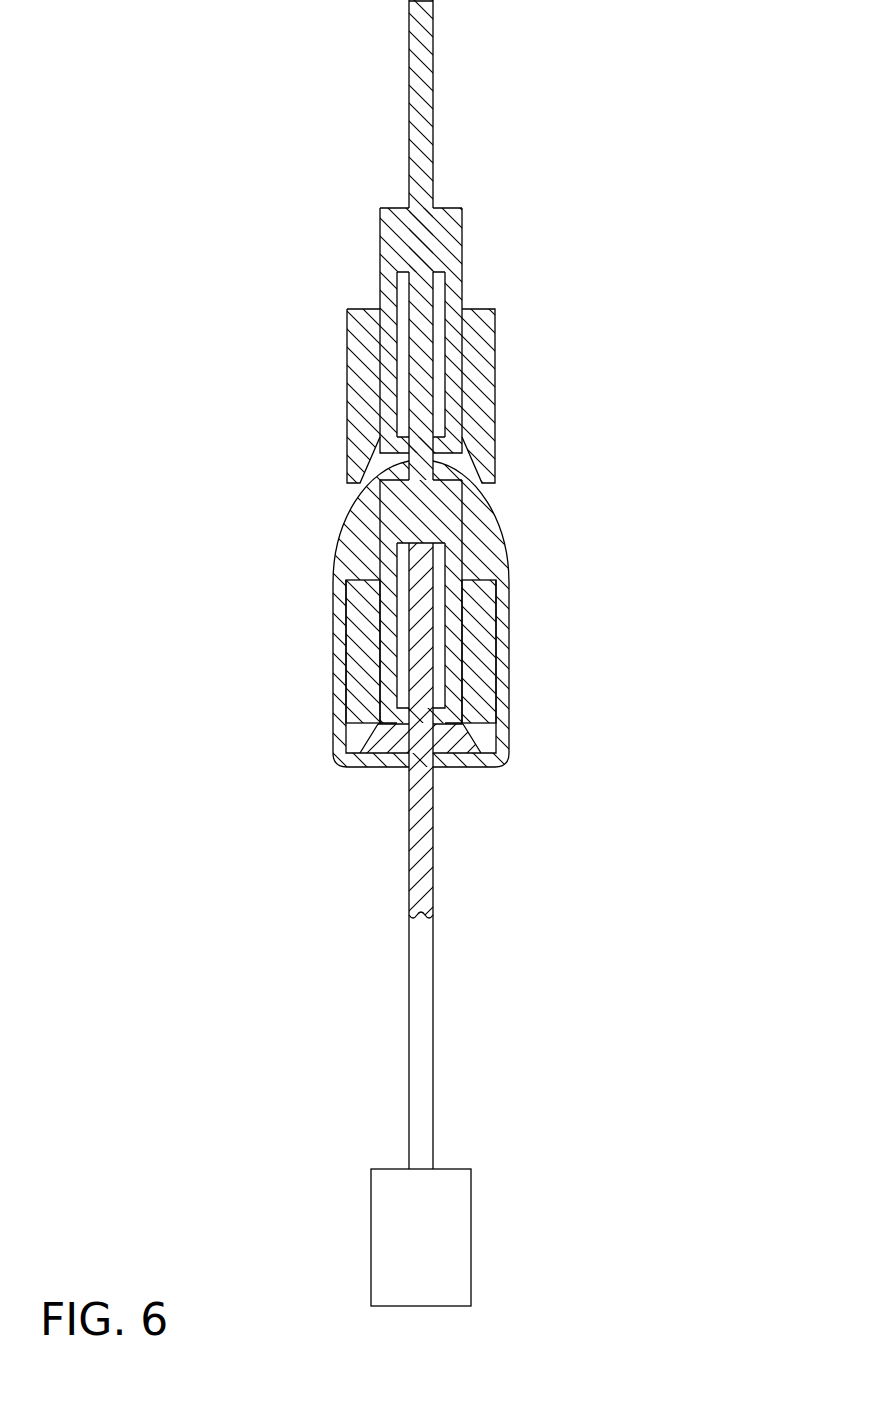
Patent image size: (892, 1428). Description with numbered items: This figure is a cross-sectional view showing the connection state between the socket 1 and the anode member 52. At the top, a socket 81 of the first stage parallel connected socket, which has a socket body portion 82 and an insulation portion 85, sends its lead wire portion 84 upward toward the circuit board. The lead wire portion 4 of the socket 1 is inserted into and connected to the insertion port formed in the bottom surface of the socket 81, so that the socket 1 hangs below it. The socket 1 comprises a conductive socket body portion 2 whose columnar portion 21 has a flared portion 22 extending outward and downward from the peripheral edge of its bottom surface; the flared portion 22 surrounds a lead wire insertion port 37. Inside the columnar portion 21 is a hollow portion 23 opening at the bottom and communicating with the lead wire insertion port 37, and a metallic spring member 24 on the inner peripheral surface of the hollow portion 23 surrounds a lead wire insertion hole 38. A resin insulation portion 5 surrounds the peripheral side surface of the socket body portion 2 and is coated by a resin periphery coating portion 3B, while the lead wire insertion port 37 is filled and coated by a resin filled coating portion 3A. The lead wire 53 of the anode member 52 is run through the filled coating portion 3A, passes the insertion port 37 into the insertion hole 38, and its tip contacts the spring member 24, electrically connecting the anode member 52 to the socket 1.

The socket 1 is at (446, 653).
The socket body portion 2 is at (453, 610).
The resin filled coating portion 3A is at (450, 745).
The resin periphery coating portion 3B is at (483, 538).
The lead wire portion 4 is at (418, 299).
The insulation portion 5 is at (482, 627).
The columnar portion 21 is at (418, 515).
The flared portion 22 is at (467, 770).
The hollow portion 23 is at (402, 560).
The spring member 24 is at (437, 669).
The lead wire insertion port 37 is at (390, 767).
The lead wire insertion hole 38 is at (408, 652).
The anode member 52 is at (388, 1227).
The lead wire 53 is at (424, 993).
The socket 81 is at (582, 414).
The socket body portion 82 is at (427, 253).
The lead wire portion 84 is at (417, 67).
The insulation portion 85 is at (362, 374).